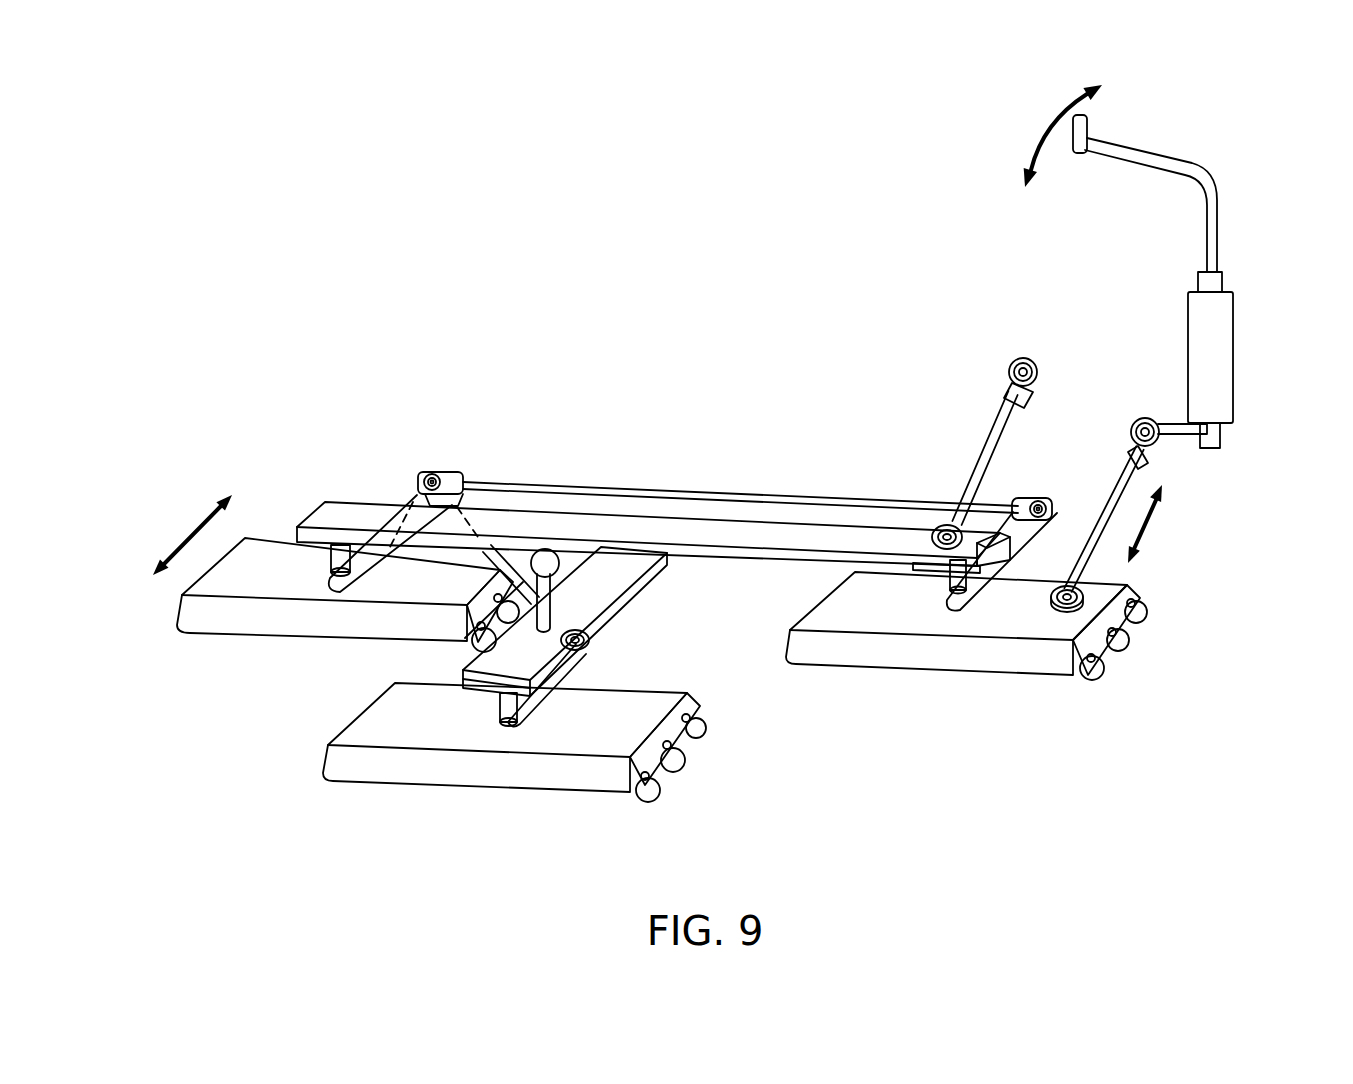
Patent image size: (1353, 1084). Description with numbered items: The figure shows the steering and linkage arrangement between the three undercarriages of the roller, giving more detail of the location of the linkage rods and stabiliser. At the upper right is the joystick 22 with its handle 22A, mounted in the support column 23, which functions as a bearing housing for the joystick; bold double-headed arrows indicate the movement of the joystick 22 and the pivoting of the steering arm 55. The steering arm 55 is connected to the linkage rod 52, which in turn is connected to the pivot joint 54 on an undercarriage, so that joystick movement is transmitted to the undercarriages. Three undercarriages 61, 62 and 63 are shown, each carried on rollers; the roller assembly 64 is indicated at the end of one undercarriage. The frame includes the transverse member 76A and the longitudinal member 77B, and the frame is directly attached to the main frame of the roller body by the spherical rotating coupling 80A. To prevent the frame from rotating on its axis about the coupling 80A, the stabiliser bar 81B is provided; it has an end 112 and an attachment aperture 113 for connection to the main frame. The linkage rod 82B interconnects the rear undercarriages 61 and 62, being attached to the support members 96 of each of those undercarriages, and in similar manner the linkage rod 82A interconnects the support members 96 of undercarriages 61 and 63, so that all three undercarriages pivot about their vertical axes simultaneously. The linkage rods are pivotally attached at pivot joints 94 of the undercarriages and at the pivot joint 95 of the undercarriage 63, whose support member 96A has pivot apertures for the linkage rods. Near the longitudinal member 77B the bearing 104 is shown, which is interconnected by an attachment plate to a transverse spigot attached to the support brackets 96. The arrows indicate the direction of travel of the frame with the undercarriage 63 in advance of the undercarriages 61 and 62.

The joystick 22 is at (1190, 173).
The handle 22A is at (1090, 128).
The support column 23 is at (1222, 335).
The linkage rod 52 is at (1095, 562).
The pivot joint 54 is at (1060, 606).
The steering arm 55 is at (1173, 438).
The undercarriage 61 is at (213, 610).
The undercarriage 62 is at (885, 652).
The undercarriage 63 is at (365, 765).
The roller assembly 64 is at (1122, 652).
The transverse member 76A is at (655, 530).
The longitudinal member 77B is at (590, 592).
The spherical rotating coupling 80A is at (545, 549).
The stabiliser bar 81B is at (990, 422).
The linkage rod 82A is at (480, 560).
The linkage rod 82B is at (793, 497).
The pivot joint 94 is at (428, 472).
The pivot joint 95 is at (588, 652).
The support member 96 is at (397, 497).
The support member 96A is at (540, 715).
The bearing 104 is at (495, 712).
The end 112 is at (1040, 373).
The attachment aperture 113 is at (1020, 358).